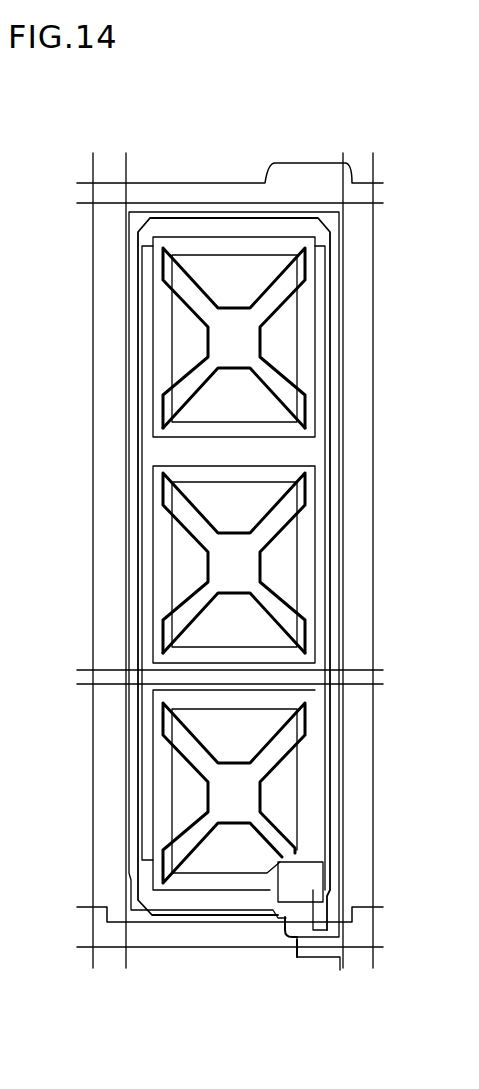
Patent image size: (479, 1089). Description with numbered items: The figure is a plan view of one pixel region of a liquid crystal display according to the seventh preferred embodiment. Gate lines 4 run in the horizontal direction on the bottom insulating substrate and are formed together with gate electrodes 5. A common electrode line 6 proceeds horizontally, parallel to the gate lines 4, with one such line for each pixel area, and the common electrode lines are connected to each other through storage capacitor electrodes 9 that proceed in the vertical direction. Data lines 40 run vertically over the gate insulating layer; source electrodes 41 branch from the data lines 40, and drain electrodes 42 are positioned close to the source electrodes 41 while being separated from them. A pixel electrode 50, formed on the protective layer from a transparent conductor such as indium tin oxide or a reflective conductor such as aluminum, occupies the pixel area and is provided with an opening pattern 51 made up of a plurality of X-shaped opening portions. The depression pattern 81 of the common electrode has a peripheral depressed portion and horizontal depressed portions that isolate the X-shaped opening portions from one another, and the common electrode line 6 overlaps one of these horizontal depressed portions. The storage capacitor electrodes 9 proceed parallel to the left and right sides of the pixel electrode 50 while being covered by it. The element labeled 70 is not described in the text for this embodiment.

The gate line 4 is at (227, 947).
The gate electrode 5 is at (353, 913).
The common electrode line 6 is at (283, 687).
The storage capacitor electrode 9 is at (155, 452).
The data line 40 is at (346, 632).
The source electrode 41 is at (297, 942).
The drain electrode 42 is at (320, 875).
The pixel electrode 50 is at (137, 866).
The opening pattern 51 is at (284, 565).
The common electrode line 70 is at (300, 355).
The depression pattern 81 is at (230, 425).